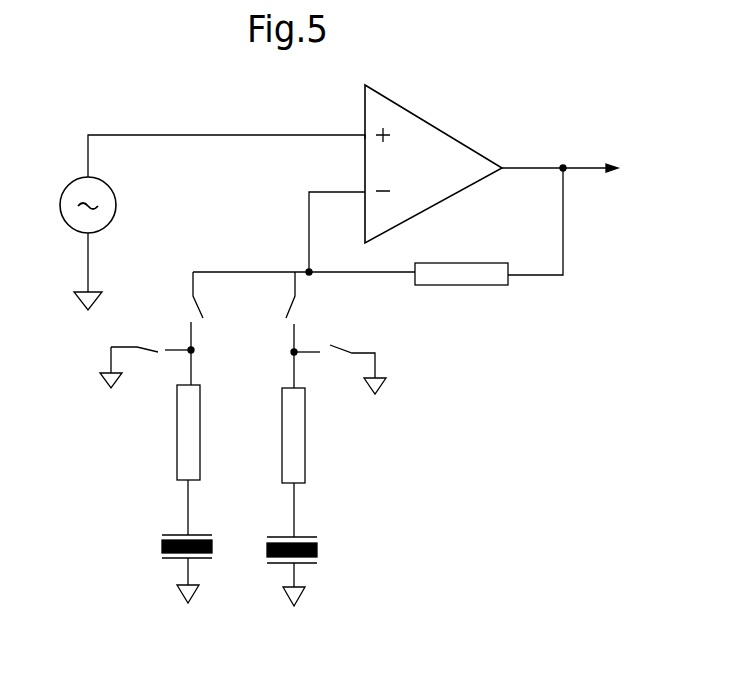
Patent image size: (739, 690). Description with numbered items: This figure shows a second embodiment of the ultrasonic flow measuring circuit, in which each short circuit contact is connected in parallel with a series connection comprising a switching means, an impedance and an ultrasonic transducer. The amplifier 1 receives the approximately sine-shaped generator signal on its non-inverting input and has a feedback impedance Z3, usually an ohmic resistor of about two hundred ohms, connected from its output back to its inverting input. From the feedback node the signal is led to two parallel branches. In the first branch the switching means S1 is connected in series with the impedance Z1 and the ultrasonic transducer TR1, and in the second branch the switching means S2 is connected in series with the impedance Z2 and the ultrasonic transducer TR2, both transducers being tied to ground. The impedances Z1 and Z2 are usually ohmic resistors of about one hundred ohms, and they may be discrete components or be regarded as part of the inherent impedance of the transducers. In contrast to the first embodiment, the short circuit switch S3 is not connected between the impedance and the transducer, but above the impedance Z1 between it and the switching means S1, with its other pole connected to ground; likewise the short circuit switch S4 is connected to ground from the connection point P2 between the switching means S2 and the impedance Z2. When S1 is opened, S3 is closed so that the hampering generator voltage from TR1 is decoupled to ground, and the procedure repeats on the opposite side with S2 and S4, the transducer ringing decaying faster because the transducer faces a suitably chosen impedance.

The amplifier 1 is at (433, 164).
The impedance Z3 is at (350, 258).
The switching means S1 is at (213, 328).
The switching means S2 is at (277, 330).
The short circuit switch S3 is at (145, 352).
The short circuit switch S4 is at (340, 357).
The connection point P2 is at (206, 350).
The impedance Z1 is at (173, 460).
The impedance Z2 is at (317, 462).
The ultrasonic transducer TR1 is at (159, 569).
The ultrasonic transducer TR2 is at (314, 571).